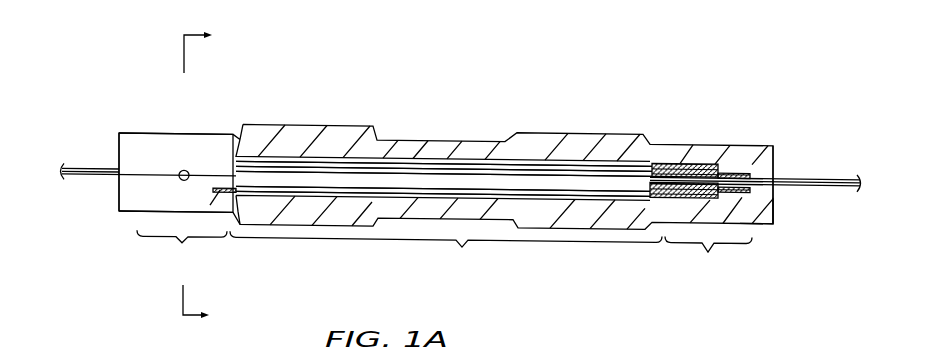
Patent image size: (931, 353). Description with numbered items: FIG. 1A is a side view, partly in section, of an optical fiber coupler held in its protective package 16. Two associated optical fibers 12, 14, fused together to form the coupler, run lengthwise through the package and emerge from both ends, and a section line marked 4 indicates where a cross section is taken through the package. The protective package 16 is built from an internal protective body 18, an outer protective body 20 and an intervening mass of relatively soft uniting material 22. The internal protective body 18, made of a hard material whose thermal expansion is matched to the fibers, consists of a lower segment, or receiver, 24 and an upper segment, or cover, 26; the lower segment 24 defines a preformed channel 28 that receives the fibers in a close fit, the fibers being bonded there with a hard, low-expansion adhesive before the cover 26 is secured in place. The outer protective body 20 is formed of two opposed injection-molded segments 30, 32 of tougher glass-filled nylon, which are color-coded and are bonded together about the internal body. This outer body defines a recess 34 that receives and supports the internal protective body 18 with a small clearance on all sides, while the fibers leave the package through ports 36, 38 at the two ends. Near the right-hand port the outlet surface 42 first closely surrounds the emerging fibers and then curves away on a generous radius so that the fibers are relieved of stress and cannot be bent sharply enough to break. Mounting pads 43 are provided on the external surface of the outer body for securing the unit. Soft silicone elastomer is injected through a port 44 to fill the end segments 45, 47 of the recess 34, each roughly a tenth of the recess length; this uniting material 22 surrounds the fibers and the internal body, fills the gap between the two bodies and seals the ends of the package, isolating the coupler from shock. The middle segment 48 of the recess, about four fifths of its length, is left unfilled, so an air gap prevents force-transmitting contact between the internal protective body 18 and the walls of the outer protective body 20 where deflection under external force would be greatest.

The section line 4- 4 is at (206, 175).
The optical fiber 12 is at (85, 178).
The optical fiber 14 is at (454, 165).
The protective package 16 is at (707, 122).
The internal protective body 18 is at (527, 157).
The outer protective body 20 is at (128, 203).
The uniting material 22 is at (225, 167).
The lower segment 24 is at (550, 185).
The upper segment 26 is at (500, 168).
The channel 28 is at (660, 190).
The outer body segment 30 is at (140, 133).
The outer body segment 32 is at (130, 211).
The recess 34 is at (410, 140).
The port 36 is at (118, 152).
The port 38 is at (771, 166).
The outlet surface 42 is at (767, 197).
The mounting pad 43 is at (314, 125).
The port 44 is at (184, 169).
The end segment 45 is at (182, 250).
The end segment 47 is at (708, 259).
The middle segment 48 is at (446, 253).